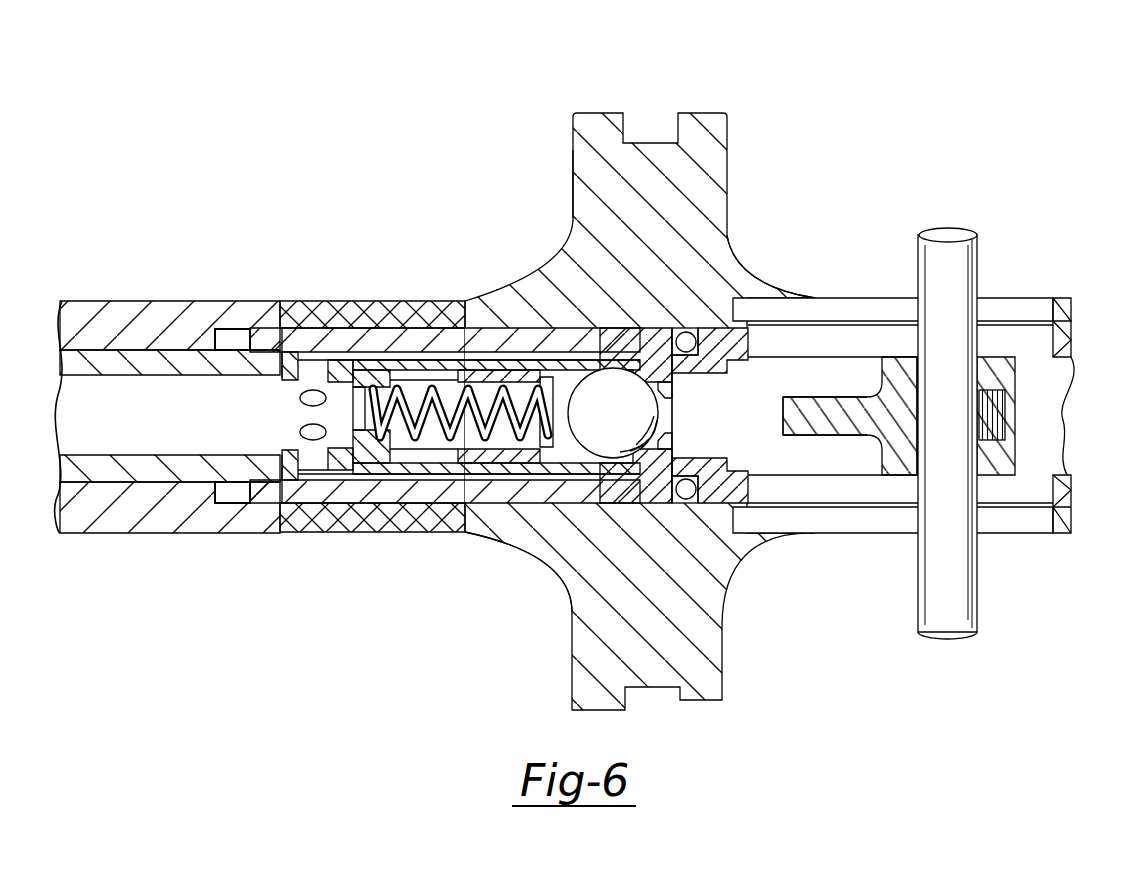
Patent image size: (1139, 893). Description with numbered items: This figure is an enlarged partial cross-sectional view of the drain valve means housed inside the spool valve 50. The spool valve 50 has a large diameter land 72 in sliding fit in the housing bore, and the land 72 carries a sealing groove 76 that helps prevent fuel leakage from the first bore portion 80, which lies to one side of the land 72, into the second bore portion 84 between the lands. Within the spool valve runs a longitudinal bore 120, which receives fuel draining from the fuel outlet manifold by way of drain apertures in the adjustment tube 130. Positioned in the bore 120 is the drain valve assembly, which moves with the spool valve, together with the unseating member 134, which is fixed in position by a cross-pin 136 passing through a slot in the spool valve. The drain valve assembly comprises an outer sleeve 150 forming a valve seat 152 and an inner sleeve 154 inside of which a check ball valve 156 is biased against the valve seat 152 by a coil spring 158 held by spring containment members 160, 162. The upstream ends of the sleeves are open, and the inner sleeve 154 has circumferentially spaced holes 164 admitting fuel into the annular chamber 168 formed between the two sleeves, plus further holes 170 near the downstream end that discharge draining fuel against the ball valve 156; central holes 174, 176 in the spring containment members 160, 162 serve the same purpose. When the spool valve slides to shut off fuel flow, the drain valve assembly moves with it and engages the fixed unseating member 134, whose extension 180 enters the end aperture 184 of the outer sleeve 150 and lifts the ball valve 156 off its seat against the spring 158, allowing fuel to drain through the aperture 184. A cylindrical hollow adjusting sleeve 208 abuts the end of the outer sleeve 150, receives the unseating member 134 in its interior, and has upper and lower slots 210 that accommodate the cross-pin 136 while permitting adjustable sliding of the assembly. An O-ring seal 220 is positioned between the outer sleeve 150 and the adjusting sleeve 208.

The spool valve 50 is at (303, 316).
The land 72 is at (577, 187).
The sealing groove 76 is at (653, 132).
The first bore portion 80 is at (462, 186).
The second bore portion 84 is at (890, 191).
The longitudinal bore 120 is at (232, 340).
The adjustment tube 130 is at (152, 360).
The unseating member 134 is at (822, 388).
The cross-pin 136 is at (978, 586).
The outer sleeve 150 is at (380, 338).
The valve seat 152 is at (636, 441).
The inner sleeve 154 is at (337, 367).
The check ball valve 156 is at (630, 416).
The coil spring 158 is at (418, 377).
The spring containment member 160 is at (300, 397).
The spring containment member 162 is at (467, 548).
The circumferentially spaced holes 164 is at (300, 431).
The annular chamber 168 is at (417, 478).
The circumferentially spaced holes 170 is at (595, 368).
The central hole 174 is at (345, 463).
The central hole 176 is at (440, 533).
The unseating extension 180 is at (787, 397).
The end aperture 184 is at (672, 394).
The adjusting sleeve 208 is at (1074, 338).
The slots 210 is at (766, 343).
The O-ring seal 220 is at (727, 233).